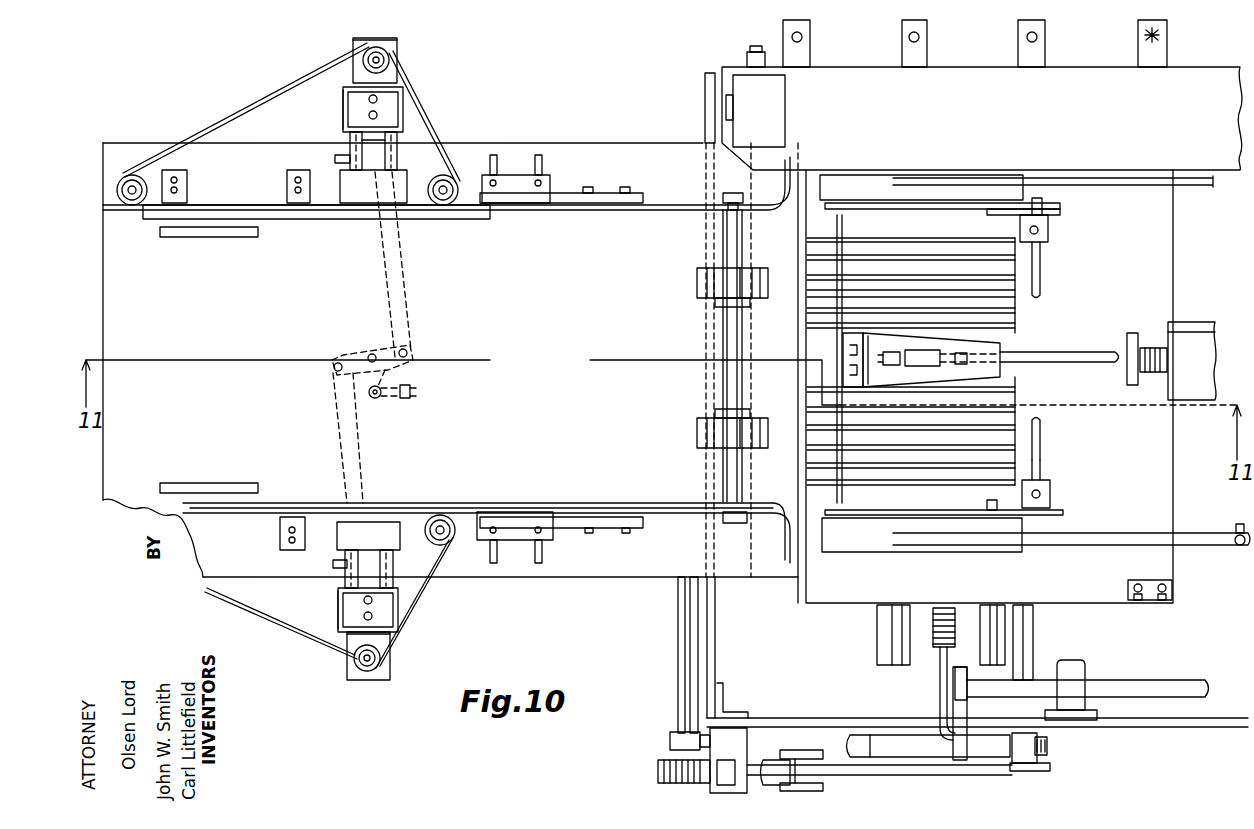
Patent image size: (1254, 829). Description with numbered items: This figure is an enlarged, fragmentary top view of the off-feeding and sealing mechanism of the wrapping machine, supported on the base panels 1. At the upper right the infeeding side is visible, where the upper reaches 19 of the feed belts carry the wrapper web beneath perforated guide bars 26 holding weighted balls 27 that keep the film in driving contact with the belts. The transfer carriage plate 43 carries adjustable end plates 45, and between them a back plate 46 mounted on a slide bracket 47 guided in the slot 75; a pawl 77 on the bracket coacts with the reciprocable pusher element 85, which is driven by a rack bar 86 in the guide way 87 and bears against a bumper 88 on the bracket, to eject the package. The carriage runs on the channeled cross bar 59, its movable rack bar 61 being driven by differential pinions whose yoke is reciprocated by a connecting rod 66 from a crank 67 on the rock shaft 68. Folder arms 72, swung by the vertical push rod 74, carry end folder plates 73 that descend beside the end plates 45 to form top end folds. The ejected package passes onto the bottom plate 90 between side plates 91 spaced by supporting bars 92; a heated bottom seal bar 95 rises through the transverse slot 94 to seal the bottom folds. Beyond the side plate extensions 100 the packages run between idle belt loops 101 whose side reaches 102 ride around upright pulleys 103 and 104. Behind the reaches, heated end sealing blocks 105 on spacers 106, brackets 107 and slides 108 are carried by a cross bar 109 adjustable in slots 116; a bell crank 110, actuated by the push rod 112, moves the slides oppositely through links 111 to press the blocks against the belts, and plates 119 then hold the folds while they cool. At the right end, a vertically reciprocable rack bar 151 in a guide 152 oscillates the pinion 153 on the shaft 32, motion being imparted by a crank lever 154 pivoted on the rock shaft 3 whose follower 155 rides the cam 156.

The base panels 1 is at (712, 80).
The rock shaft 3 is at (1028, 655).
The upper reaches of feed belts 19 is at (1148, 40).
The perforated guide bars 26 is at (898, 43).
The weighted balls 27 is at (792, 37).
The shaft 32 is at (680, 665).
The carriage plate 43 is at (1082, 588).
The end plates 45 is at (1050, 210).
The back plate 46 is at (843, 490).
The slide bracket 47 is at (978, 363).
The channeled cross bar 59 is at (877, 630).
The movable rack bar 61 is at (933, 630).
The connecting rod 66 is at (940, 680).
The crank 67 is at (953, 700).
The rock shaft 68 is at (1135, 690).
The folder arms 72 is at (1150, 188).
The end folder plates 73 is at (872, 190).
The vertical push rod 74 is at (1238, 525).
The slot 75 is at (1072, 358).
The pawl 77 is at (845, 360).
The pusher element 85 is at (1131, 333).
The rack bar 86 is at (1158, 372).
The guide way 87 is at (1185, 336).
The bumper 88 is at (845, 352).
The bottom plate 90 is at (580, 396).
The side plates 91 is at (660, 200).
The supporting bars 92 is at (605, 195).
The transverse slot 94 is at (722, 196).
The bottom seal bar 95 is at (735, 522).
The side plate extensions 100 is at (512, 210).
The belt loops 101 is at (225, 130).
The side reaches of belts 102 is at (332, 210).
The lead pulleys 103 is at (132, 180).
The pulleys 104 is at (390, 58).
The end sealing blocks 105 is at (400, 190).
The spacers 106 is at (352, 142).
The brackets 107 is at (350, 110).
The slides 108 is at (345, 92).
The cross bar 109 is at (356, 40).
The bell crank 110 is at (360, 352).
The links 111 is at (405, 280).
The push rod 112 is at (405, 400).
The slots 116 is at (336, 159).
The plates 119 is at (222, 205).
The vertically reciprocable rack bar 151 is at (730, 765).
The guide 152 is at (700, 748).
The pinion 153 is at (658, 770).
The crank lever 154 is at (1050, 770).
The follower 155 is at (985, 768).
The cam 156 is at (855, 740).